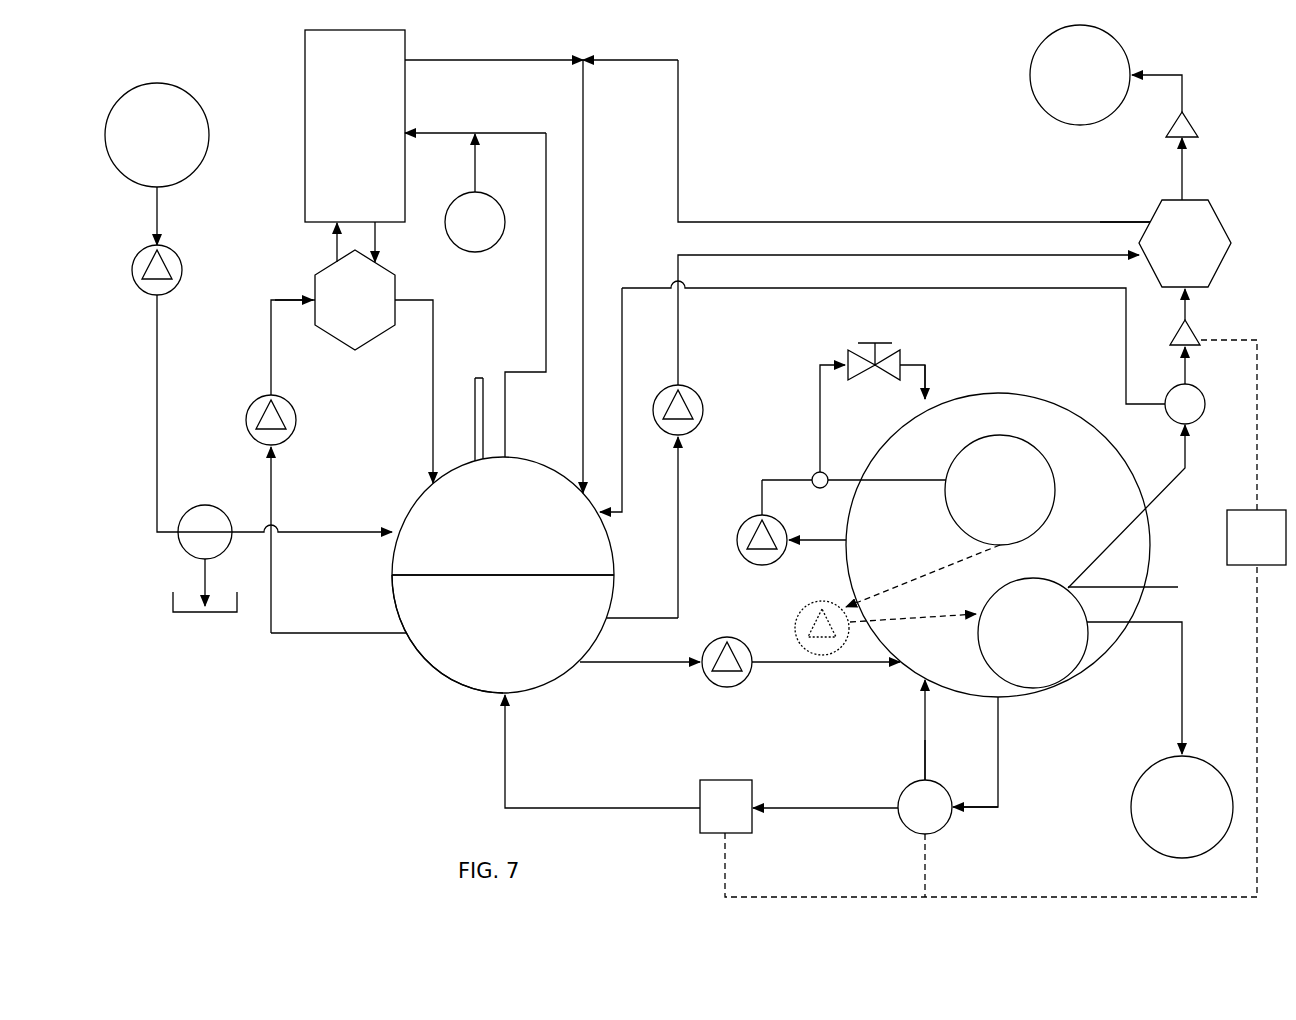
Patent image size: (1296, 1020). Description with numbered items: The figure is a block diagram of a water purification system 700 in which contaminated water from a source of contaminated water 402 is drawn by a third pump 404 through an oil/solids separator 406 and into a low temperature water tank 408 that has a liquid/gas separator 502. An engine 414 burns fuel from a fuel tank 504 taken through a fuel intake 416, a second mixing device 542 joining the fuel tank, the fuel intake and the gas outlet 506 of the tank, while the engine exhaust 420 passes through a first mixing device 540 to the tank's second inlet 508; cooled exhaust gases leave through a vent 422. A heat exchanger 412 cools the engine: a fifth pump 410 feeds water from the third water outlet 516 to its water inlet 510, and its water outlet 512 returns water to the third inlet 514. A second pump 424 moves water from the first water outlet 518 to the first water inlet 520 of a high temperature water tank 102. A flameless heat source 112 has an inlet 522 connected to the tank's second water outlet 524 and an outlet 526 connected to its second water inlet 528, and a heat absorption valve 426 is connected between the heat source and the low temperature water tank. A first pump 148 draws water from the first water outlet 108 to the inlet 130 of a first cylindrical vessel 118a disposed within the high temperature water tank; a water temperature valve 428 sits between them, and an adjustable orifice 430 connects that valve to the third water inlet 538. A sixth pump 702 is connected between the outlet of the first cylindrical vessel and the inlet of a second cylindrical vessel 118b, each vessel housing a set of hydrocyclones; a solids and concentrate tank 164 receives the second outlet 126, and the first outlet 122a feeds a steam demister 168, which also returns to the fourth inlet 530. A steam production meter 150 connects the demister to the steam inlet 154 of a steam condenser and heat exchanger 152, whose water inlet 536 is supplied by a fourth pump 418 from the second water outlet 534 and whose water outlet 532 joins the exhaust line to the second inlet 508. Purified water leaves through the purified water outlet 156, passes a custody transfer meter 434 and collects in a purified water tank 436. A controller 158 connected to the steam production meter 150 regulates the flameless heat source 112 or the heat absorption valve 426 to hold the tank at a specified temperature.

The system 700 is at (782, 56).
The water source 402 is at (157, 164).
The pump 404 is at (236, 388).
The pump 406 is at (205, 544).
The pump 410 is at (305, 466).
The electrolyzer 414 is at (355, 146).
The heat exchanger 412 is at (355, 300).
The line 510 is at (312, 296).
The line 512 is at (406, 296).
The line 514 is at (428, 488).
The oxygen line 420 is at (410, 58).
The line 540 is at (590, 58).
The line 508 is at (581, 470).
The hydrogen line 416 is at (410, 130).
The line 542 is at (482, 130).
The carbon dioxide source / line 504 is at (368, 580).
The line 506 is at (512, 455).
The vent 422 is at (485, 377).
The bioreactor 408 is at (503, 575).
The membrane 502 is at (503, 580).
The lower chamber 516 is at (412, 645).
The line 530 is at (605, 520).
The line 534 is at (610, 619).
The pump 418 is at (896, 345).
The line 536 is at (1143, 262).
The line 518 is at (585, 665).
The pump 424 is at (727, 678).
The line 520 is at (898, 668).
The controller 426 is at (881, 731).
The sensor 112 is at (852, 838).
The line 528 is at (922, 692).
The line 526 is at (920, 782).
The line 524 is at (1002, 704).
The line 522 is at (955, 815).
The harvest tank 164 is at (1182, 807).
The line 126 is at (1134, 688).
The controller 158 is at (1243, 452).
The line 122a is at (1147, 511).
The reactor vessel 102 is at (998, 545).
The first compartment 118a is at (1000, 490).
The second compartment 118b is at (1033, 633).
The wall 130 is at (948, 480).
The junction 428 is at (854, 482).
The valve 430 is at (872, 394).
The line 538 is at (922, 400).
The pump 148 is at (744, 540).
The line 108 is at (848, 551).
The pump 702 is at (879, 600).
The separator 152 is at (1185, 243).
The line 532 is at (1150, 225).
The outlet line 156 is at (1196, 208).
The valve 434 is at (1191, 106).
The product tank 436 is at (1080, 75).
The inlet line 154 is at (1200, 291).
The valve 150 is at (1168, 352).
The pump 168 is at (1204, 404).